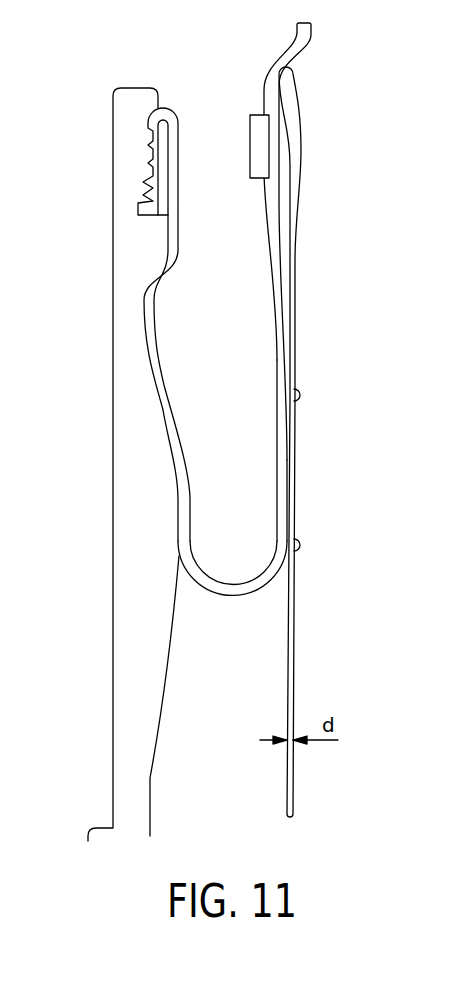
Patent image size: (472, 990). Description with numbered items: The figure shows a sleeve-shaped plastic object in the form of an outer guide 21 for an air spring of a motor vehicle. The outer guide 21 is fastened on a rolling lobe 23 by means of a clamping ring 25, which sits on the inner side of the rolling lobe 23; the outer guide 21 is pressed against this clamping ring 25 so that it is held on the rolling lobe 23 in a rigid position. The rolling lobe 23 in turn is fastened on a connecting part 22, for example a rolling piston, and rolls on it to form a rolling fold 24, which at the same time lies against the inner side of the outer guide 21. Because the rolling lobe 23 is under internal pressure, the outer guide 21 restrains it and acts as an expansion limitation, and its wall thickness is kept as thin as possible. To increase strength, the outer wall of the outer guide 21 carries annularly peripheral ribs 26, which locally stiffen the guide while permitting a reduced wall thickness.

The outer guide 21 is at (292, 248).
The connecting part 22 is at (132, 462).
The rolling lobe 23 is at (277, 347).
The rolling fold 24 is at (233, 590).
The clamping ring 25 is at (257, 125).
The ribs 26 is at (299, 397).